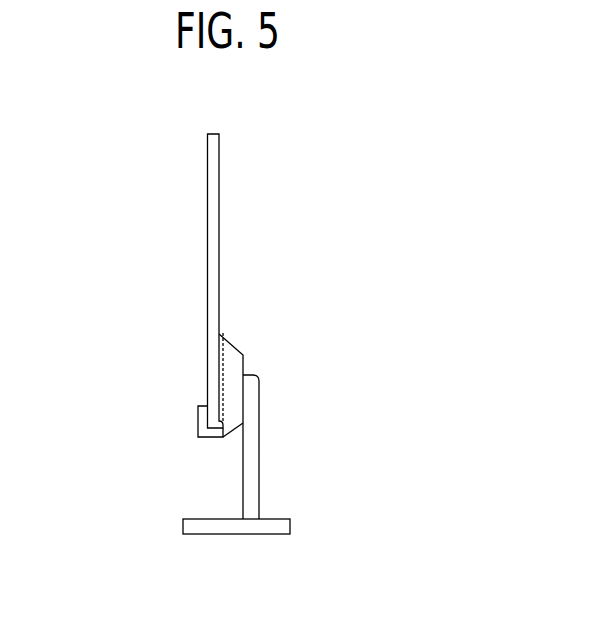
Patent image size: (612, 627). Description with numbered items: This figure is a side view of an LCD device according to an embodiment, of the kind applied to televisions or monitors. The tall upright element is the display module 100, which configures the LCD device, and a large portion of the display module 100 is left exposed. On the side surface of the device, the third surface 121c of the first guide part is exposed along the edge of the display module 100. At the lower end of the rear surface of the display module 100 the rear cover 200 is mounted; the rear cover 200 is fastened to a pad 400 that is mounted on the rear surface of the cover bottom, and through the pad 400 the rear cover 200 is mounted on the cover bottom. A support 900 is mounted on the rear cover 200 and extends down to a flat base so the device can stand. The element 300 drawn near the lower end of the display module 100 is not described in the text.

The display module 100 is at (270, 150).
The third surface of the first guide part 121c is at (212, 202).
The pad 400 is at (232, 352).
The holder 300 is at (198, 424).
The rear cover 200 is at (245, 400).
The support 900 is at (251, 475).